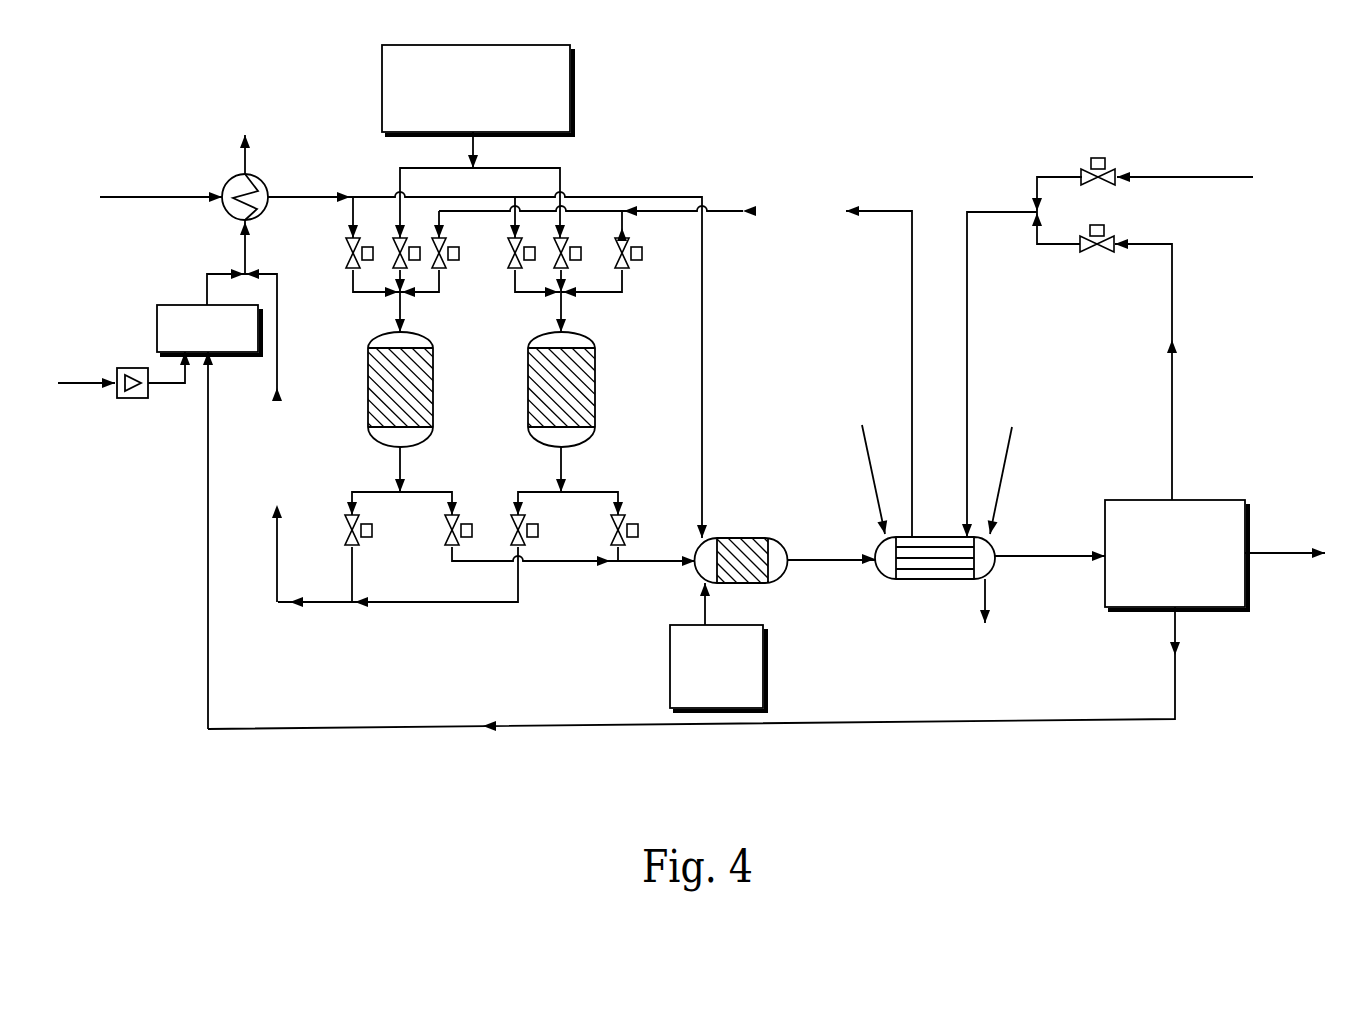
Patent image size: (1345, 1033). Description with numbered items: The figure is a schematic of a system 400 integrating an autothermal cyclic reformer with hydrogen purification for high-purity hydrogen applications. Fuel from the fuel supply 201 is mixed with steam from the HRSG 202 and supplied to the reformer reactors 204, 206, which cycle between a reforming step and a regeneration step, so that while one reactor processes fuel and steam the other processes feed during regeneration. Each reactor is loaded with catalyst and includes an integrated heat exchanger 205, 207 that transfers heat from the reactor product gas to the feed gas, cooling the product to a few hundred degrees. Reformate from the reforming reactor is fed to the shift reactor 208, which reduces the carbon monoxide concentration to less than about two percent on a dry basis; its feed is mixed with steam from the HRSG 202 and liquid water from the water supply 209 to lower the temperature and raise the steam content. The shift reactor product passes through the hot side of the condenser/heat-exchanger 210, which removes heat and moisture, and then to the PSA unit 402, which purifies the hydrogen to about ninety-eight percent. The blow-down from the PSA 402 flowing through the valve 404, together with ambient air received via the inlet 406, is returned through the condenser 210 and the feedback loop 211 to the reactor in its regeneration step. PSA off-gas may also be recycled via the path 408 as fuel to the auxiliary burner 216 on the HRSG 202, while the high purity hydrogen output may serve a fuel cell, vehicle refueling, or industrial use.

The fuel supply 201 is at (572, 80).
The heat recovery steam generator (HRSG) 202 is at (233, 178).
The reformer reactor 204 is at (428, 332).
The heat exchanger 205 is at (424, 388).
The reformer reactor 206 is at (590, 332).
The heat exchanger 207 is at (586, 388).
The shift reactor 208 is at (785, 538).
The water supply 209 is at (763, 657).
The condenser/heat-exchanger 210 is at (995, 568).
The feedback loop 211 is at (888, 208).
The auxiliary burner 216 is at (157, 320).
The autothermal cyclic reformer integration for high-purity hydrogen 400 is at (935, 75).
The pressure swing adsorption (PSA) unit 402 is at (1245, 500).
The valve 404 is at (1106, 232).
The air inlet 406 is at (1105, 161).
The recycle path 408 is at (1175, 697).